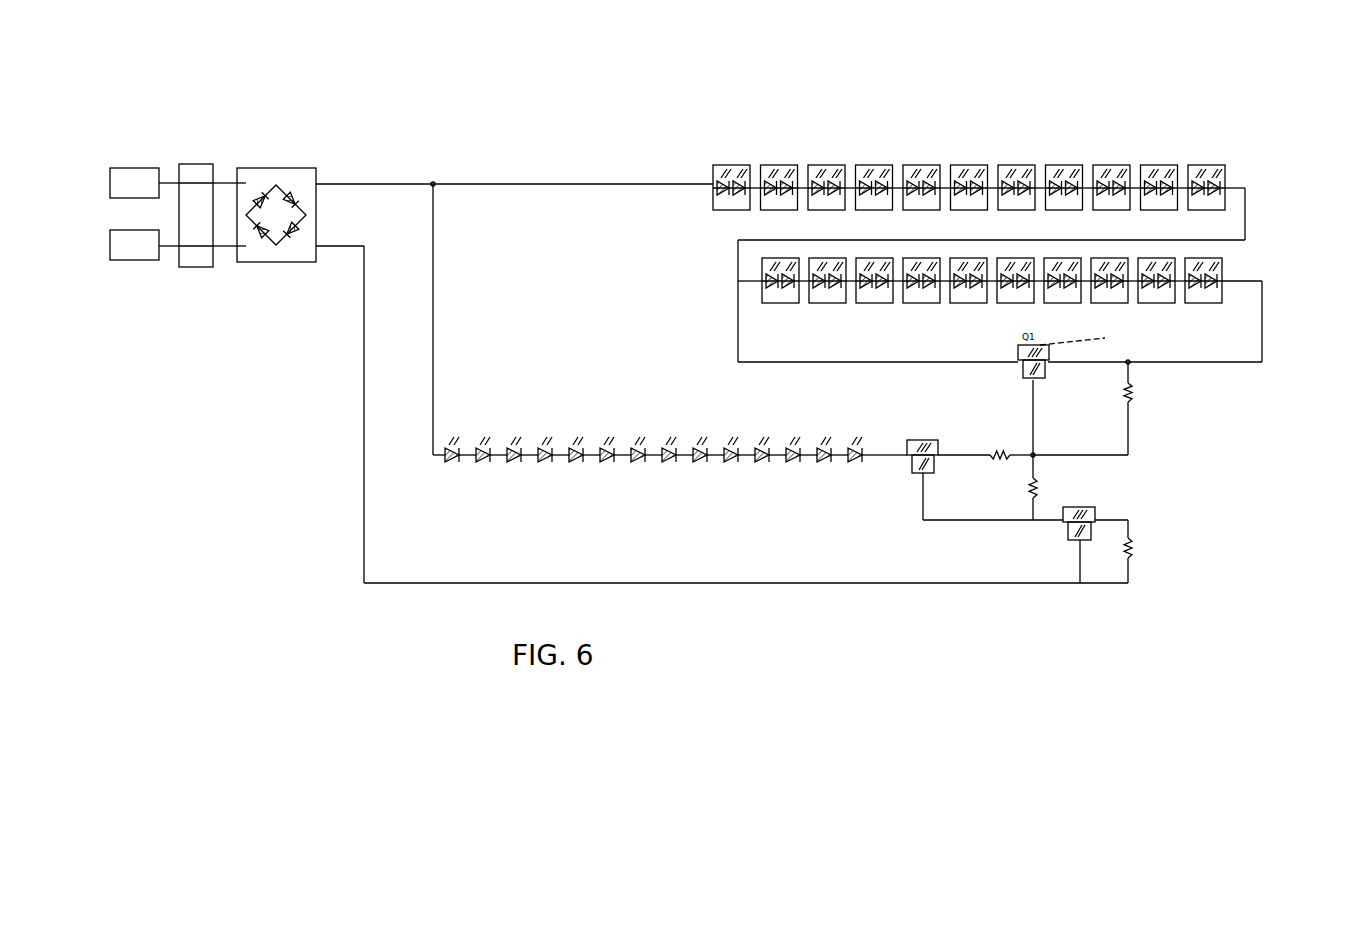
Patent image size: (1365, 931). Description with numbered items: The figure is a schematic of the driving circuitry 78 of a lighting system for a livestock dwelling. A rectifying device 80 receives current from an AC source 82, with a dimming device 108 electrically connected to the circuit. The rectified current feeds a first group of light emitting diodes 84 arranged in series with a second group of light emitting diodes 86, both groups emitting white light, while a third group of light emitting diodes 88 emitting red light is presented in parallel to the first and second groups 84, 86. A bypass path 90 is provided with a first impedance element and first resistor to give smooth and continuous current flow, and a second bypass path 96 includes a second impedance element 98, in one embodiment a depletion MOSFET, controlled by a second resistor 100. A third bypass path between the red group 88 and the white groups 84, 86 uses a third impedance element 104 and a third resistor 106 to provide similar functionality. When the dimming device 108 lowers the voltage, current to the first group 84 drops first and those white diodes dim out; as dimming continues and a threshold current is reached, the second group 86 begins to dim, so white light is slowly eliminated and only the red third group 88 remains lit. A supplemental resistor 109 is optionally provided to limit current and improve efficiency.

The driving circuitry 78 is at (667, 112).
The rectifying device 80 is at (276, 168).
The AC source 82 is at (110, 123).
The first group of light emitting diodes 84 is at (1052, 118).
The second group of light emitting diodes 86 is at (1256, 272).
The third group of light emitting diodes 88 is at (688, 423).
The bypass path 90 is at (934, 442).
The second bypass path 96 is at (1130, 395).
The second impedance element 98 is at (1082, 507).
The second resistor 100 is at (1130, 555).
The third impedance element 104 is at (915, 442).
The third resistor 106 is at (1030, 487).
The dimming device 108 is at (197, 164).
The supplemental resistor 109 is at (1007, 455).